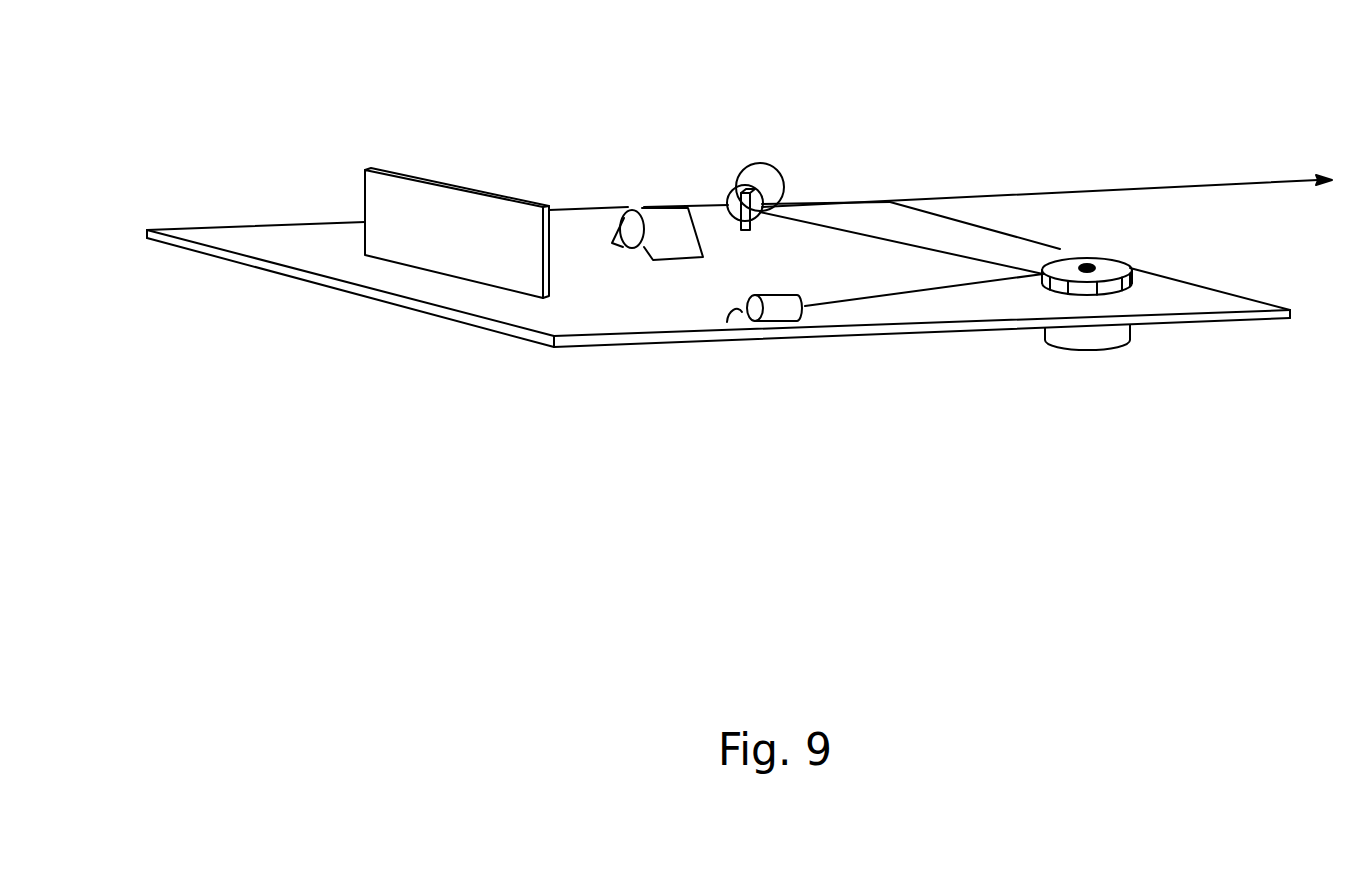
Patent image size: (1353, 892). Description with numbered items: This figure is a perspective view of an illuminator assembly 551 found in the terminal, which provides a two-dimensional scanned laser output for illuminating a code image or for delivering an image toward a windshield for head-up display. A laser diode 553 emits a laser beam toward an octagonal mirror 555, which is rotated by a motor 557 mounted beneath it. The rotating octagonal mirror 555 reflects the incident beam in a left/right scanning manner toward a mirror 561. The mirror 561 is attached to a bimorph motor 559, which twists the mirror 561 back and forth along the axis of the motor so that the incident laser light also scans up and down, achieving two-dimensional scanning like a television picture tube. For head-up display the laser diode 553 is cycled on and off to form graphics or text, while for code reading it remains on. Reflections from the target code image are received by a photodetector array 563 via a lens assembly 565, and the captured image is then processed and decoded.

The illuminator assembly 551 is at (650, 90).
The laser diode 553 is at (778, 322).
The octagonal mirror 555 is at (1112, 265).
The motor 557 is at (1097, 355).
The bimorph motor 559 is at (762, 163).
The mirror 561 is at (728, 203).
The photodetector array 563 is at (420, 176).
The lens assembly 565 is at (643, 205).